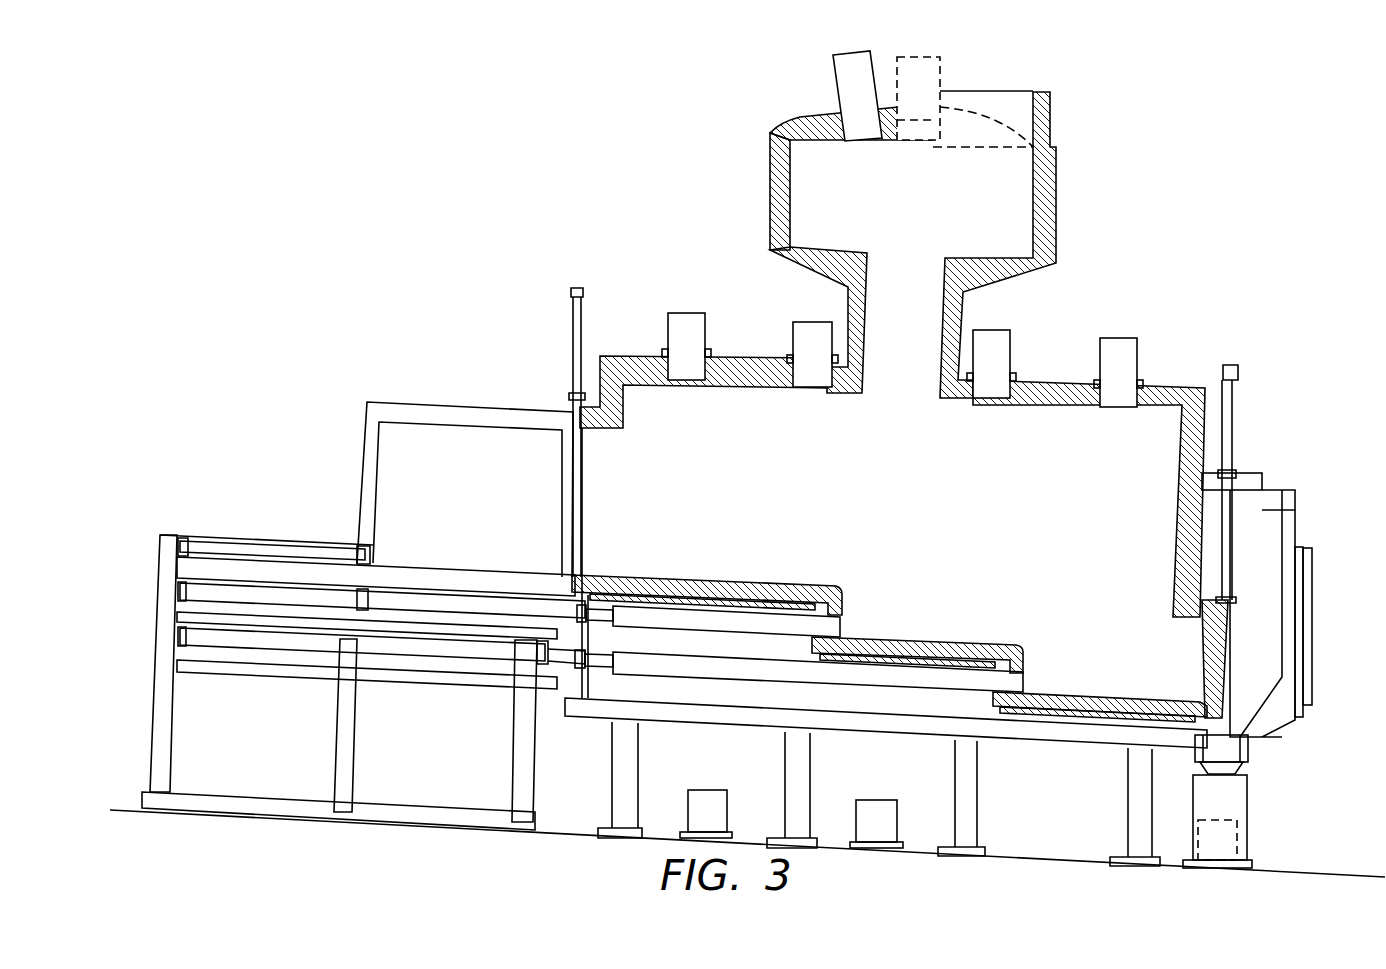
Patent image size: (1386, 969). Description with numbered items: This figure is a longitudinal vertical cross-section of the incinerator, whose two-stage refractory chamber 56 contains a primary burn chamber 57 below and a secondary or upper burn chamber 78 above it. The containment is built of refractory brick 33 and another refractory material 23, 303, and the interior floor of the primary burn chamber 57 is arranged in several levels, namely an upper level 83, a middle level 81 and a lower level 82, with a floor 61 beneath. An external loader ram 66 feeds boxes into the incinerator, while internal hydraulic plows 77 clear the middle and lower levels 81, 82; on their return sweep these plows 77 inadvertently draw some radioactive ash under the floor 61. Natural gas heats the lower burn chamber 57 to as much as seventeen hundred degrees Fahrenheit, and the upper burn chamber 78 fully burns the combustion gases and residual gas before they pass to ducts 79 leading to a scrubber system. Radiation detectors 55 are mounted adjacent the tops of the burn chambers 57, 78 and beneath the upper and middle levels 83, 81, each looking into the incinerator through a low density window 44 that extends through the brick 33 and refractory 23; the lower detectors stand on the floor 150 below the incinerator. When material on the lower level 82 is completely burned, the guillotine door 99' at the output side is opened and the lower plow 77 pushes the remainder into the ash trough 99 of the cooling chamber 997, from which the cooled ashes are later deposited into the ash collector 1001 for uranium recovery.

The refractory material 23 is at (805, 268).
The refractory brick 33 is at (770, 190).
The low density window 44 is at (857, 143).
The detector 55 is at (915, 55).
The two-stage refractory chamber 56 is at (1018, 207).
The primary burn chamber 57 is at (932, 487).
The floor 61 is at (811, 580).
The external loader ram 66 is at (375, 557).
The internal hydraulic plow 77 is at (838, 628).
The secondary burn chamber 78 is at (900, 226).
The duct 79 is at (1090, 73).
The middle level 81 is at (918, 640).
The lower level 82 is at (1140, 698).
The upper level 83 is at (757, 578).
The ash trough 99 is at (1252, 780).
The guillotine door 99' is at (1257, 551).
The floor 150 is at (568, 826).
The refractory material 303 is at (803, 118).
The cooling chamber 997 is at (1228, 745).
The ash collector 1001 is at (1245, 803).